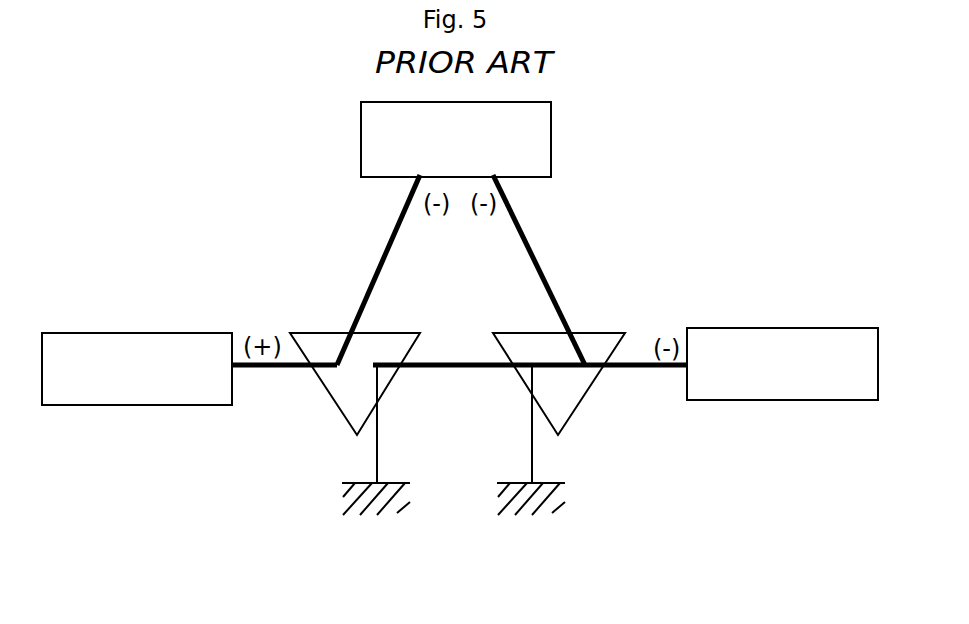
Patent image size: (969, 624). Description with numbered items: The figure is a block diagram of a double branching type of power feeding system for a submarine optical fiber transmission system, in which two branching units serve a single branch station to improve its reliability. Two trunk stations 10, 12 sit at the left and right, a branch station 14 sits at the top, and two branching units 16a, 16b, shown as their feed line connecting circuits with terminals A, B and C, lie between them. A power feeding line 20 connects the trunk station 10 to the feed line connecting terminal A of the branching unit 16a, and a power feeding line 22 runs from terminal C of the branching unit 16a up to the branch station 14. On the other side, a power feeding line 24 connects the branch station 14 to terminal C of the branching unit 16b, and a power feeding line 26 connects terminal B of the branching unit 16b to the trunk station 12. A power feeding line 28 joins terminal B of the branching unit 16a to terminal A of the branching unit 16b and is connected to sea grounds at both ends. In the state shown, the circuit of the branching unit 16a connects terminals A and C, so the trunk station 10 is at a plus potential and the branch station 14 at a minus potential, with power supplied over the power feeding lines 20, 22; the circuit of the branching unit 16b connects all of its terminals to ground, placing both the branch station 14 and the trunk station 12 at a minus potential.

The trunk station 10 is at (133, 333).
The trunk station 12 is at (783, 328).
The branch station 14 is at (551, 140).
The branching unit 16a is at (336, 398).
The branching unit 16b is at (580, 398).
The power feeding line 20 is at (283, 364).
The power feeding line 22 is at (388, 243).
The power feeding line 24 is at (522, 230).
The power feeding line 26 is at (667, 368).
The power feeding line 28 is at (462, 368).